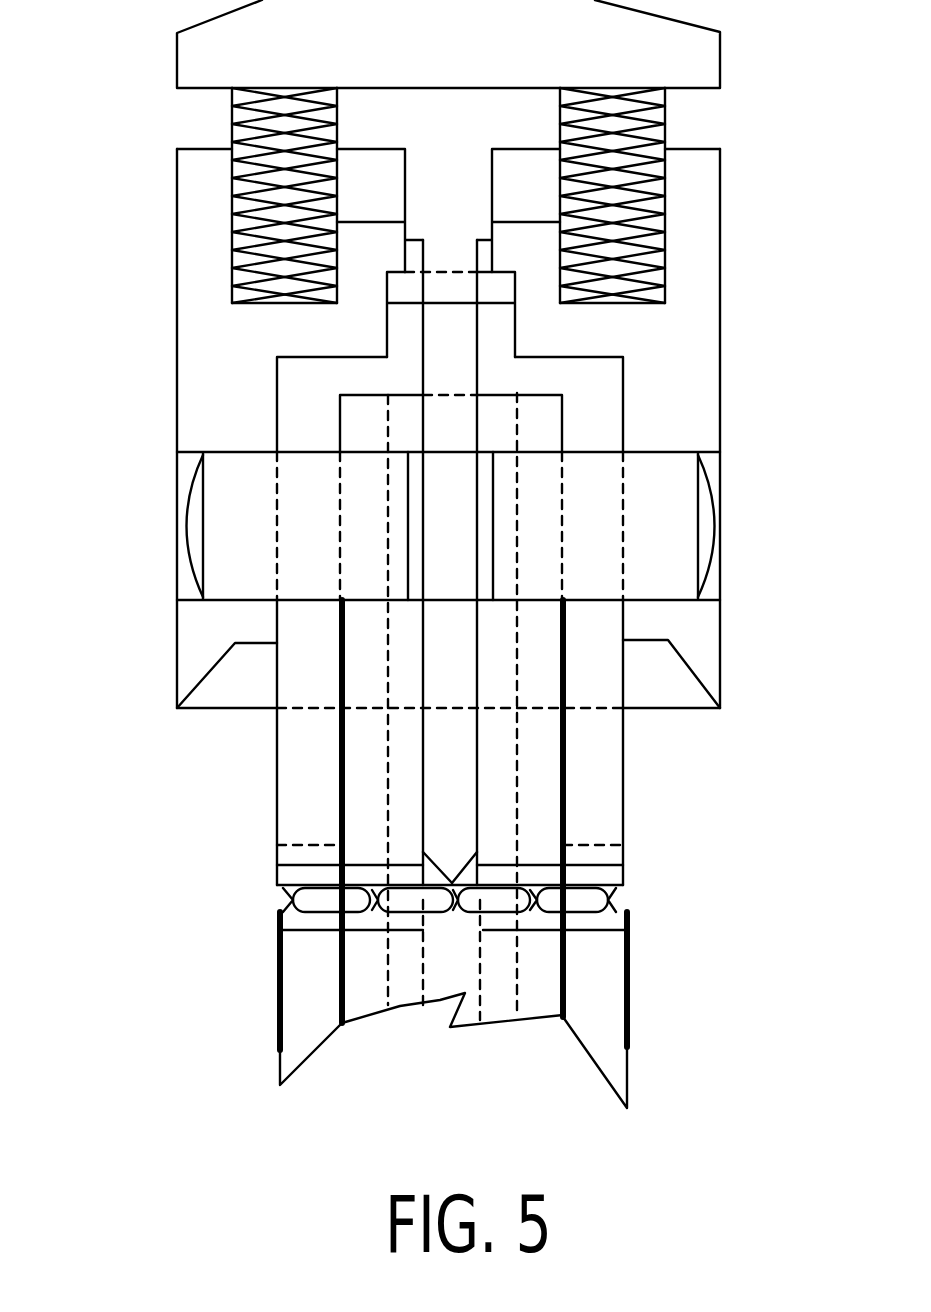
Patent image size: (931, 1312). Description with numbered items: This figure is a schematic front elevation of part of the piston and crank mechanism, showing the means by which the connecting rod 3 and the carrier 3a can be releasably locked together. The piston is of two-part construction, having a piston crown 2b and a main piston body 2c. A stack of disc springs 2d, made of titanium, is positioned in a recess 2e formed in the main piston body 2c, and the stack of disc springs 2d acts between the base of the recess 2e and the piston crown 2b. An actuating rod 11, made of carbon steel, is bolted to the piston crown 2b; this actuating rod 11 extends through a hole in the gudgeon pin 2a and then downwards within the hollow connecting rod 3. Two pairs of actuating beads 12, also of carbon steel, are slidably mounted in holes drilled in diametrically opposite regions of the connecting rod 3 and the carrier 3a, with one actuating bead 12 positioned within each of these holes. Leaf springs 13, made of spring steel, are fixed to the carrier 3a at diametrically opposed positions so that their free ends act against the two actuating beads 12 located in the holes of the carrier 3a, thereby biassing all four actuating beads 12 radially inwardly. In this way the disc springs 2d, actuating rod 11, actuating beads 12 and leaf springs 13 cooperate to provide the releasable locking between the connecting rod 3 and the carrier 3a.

The gudgeon pin 2a is at (600, 515).
The piston crown 2b is at (486, 72).
The main piston body 2c is at (254, 382).
The stack of disc springs 2d is at (252, 236).
The recess 2e is at (672, 237).
The connecting rod 3 is at (368, 754).
The carrier 3a is at (594, 771).
The actuating rod 11 is at (450, 549).
The actuating beads 12 is at (399, 898).
The leaf springs 13 is at (274, 921).